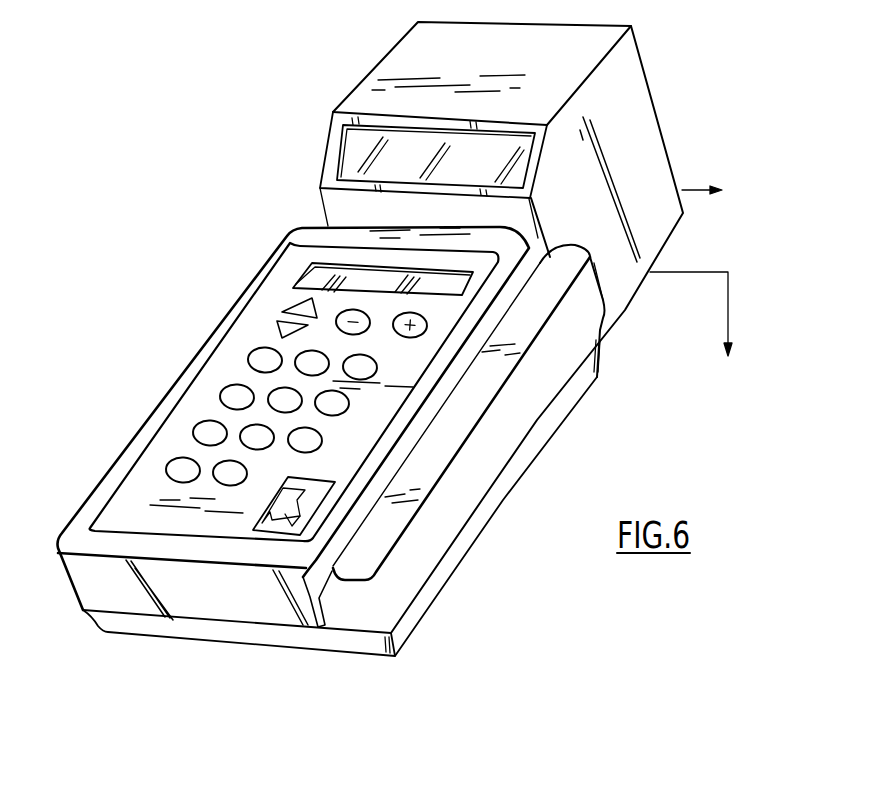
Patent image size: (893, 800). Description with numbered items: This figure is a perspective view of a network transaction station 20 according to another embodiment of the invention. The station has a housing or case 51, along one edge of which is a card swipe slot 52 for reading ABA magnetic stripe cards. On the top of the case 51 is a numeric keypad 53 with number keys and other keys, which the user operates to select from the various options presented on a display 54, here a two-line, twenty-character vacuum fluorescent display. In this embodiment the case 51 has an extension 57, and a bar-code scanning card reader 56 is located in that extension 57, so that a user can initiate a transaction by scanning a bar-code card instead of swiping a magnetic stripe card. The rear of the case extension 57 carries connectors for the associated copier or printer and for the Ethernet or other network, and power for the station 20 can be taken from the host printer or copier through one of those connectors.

The network transaction station 20 is at (176, 349).
The housing or case 51 is at (68, 577).
The card swipe slot 52 is at (400, 483).
The numeric keypad 53 is at (182, 437).
The display 54 is at (315, 280).
The bar-code scanning card reader 56 is at (640, 128).
The extension of the housing or case 57 is at (360, 148).